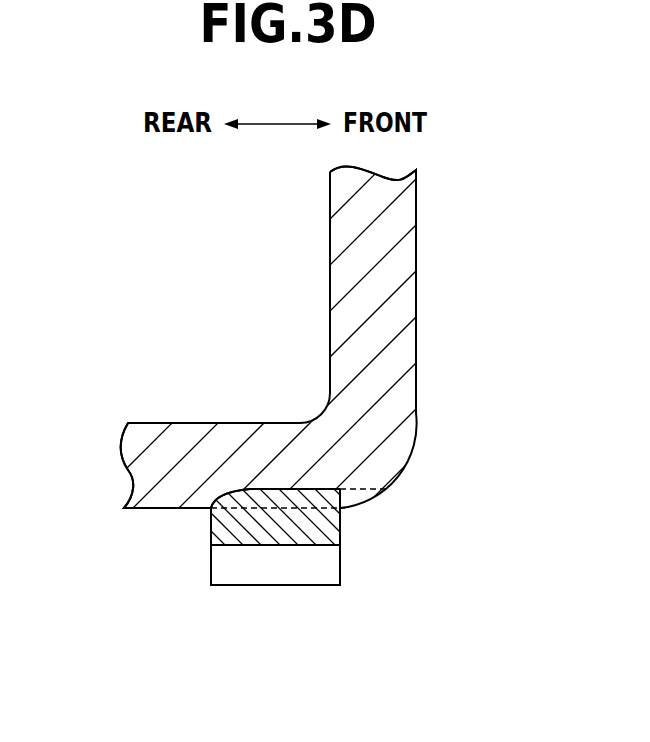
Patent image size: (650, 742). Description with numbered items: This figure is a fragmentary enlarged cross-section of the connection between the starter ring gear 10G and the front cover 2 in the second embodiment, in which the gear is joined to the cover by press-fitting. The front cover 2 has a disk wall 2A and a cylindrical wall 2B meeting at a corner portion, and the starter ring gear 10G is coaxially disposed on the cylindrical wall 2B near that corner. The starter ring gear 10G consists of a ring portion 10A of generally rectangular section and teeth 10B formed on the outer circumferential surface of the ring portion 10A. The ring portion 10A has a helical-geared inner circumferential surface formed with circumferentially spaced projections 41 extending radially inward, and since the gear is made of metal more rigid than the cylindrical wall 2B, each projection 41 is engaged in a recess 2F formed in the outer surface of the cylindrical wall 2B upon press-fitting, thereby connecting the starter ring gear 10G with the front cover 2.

The front cover 2 is at (316, 237).
The disk wall 2A is at (392, 233).
The cylindrical wall 2B is at (150, 442).
The recess 2F is at (274, 489).
The ring portion 10A is at (313, 530).
The teeth 10B is at (313, 570).
The starter ring gear 10G is at (192, 584).
The projection 41 is at (240, 496).